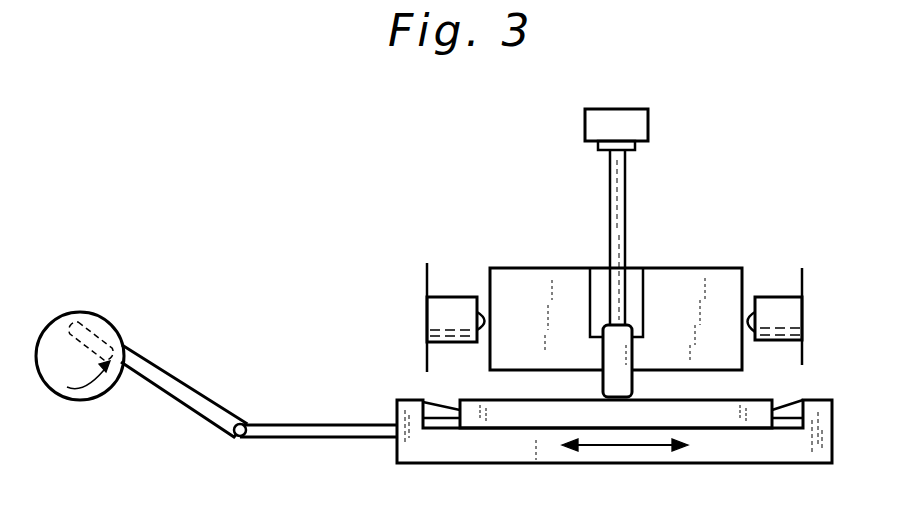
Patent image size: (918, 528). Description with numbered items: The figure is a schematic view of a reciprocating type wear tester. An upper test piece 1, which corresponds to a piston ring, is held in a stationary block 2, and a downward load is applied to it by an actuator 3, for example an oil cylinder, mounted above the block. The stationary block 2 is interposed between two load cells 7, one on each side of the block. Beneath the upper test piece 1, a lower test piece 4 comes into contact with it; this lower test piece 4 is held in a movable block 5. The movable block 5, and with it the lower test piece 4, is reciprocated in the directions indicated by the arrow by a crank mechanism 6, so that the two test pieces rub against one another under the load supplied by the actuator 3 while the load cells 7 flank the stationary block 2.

The upper test piece 1 is at (632, 385).
The stationary block 2 is at (700, 266).
The actuator 3 is at (648, 116).
The lower test piece 4 is at (738, 418).
The movable block 5 is at (528, 465).
The crank mechanism 6 is at (124, 376).
The load cells 7 is at (453, 310).